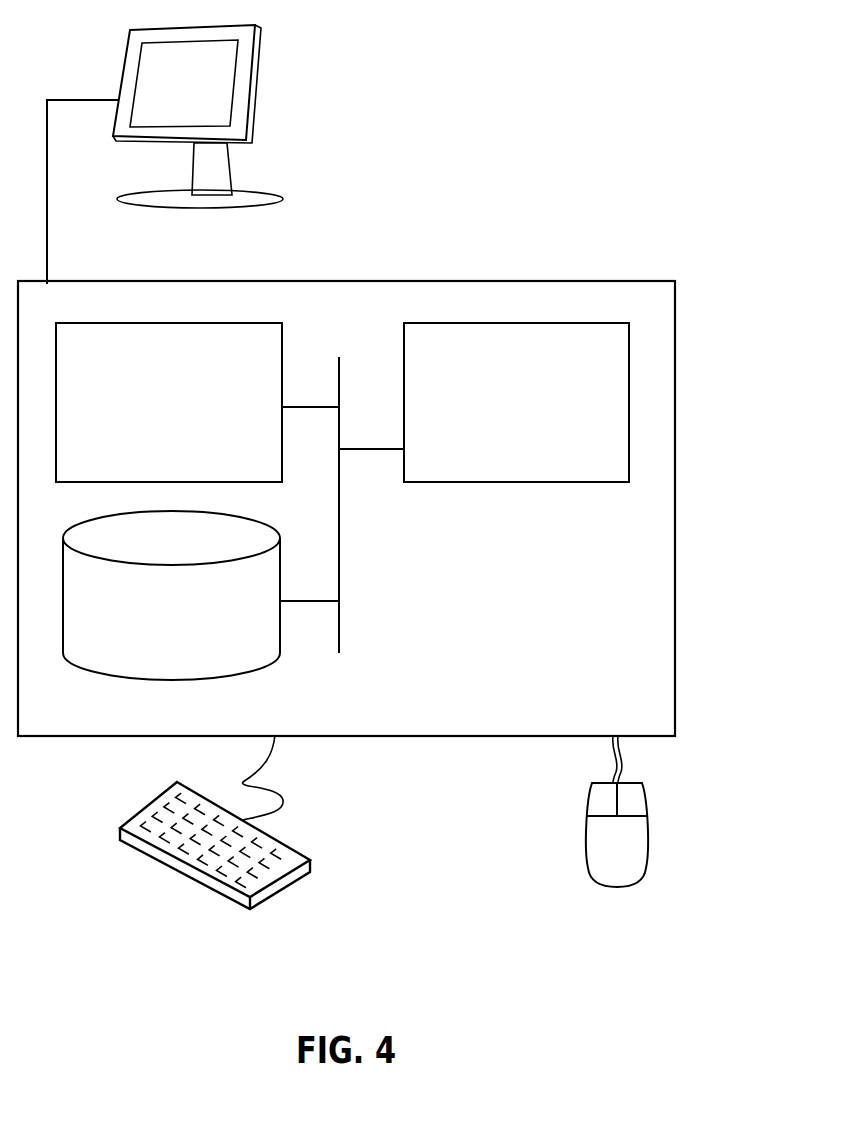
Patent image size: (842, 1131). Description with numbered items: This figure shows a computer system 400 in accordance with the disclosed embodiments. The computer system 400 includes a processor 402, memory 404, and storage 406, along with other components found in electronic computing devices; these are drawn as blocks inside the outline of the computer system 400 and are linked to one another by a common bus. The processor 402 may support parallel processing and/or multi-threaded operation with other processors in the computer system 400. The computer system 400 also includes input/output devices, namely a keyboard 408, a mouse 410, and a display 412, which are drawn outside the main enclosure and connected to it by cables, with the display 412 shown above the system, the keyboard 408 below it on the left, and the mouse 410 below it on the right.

The computer system 400 is at (393, 260).
The processor 402 is at (497, 417).
The memory 404 is at (148, 416).
The storage 406 is at (155, 627).
The keyboard 408 is at (140, 845).
The mouse 410 is at (595, 857).
The display 412 is at (165, 154).